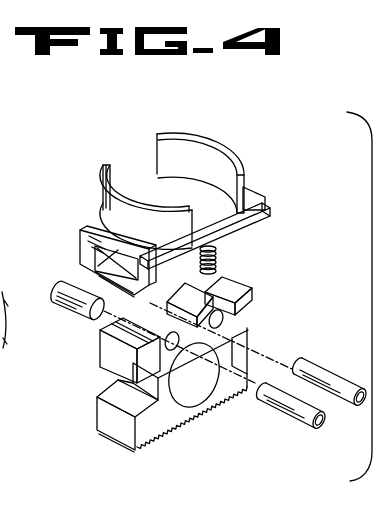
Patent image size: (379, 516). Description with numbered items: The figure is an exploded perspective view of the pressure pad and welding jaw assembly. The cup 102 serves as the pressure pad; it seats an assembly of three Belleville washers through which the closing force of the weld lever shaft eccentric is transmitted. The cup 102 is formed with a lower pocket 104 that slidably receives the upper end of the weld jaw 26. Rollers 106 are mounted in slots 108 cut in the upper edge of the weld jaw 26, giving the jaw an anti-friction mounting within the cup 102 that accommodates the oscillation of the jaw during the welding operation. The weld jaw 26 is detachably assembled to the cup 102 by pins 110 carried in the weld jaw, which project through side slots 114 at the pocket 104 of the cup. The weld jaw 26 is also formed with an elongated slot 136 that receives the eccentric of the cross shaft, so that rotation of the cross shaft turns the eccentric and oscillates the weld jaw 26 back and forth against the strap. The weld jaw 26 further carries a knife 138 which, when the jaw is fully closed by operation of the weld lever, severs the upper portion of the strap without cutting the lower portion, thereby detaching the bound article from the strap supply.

The cup 102 is at (167, 145).
The lower pocket 104 is at (97, 254).
The rollers 106 is at (88, 276).
The slots 108 is at (112, 328).
The pins 110 is at (322, 416).
The side slots 114 is at (258, 227).
The elongated slot 136 is at (200, 347).
The knife 138 is at (270, 351).
The weld jaw 26 is at (107, 417).